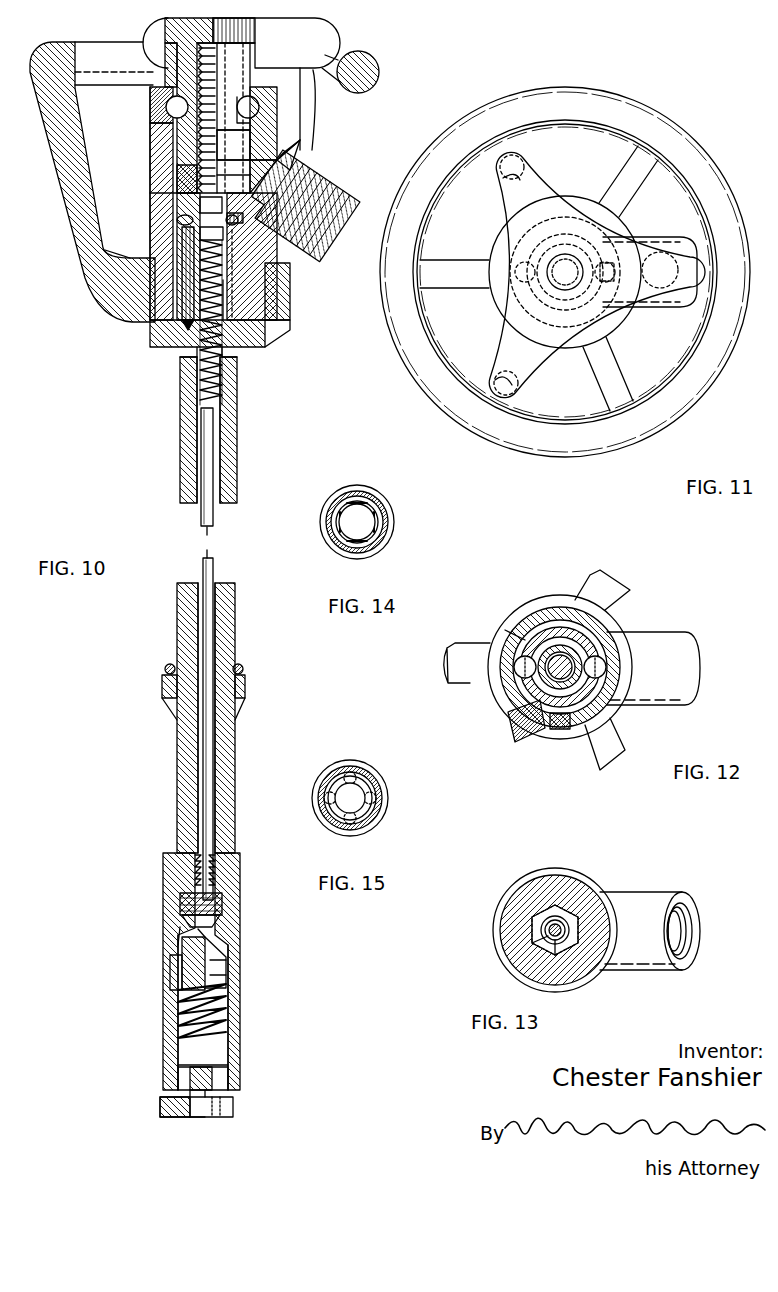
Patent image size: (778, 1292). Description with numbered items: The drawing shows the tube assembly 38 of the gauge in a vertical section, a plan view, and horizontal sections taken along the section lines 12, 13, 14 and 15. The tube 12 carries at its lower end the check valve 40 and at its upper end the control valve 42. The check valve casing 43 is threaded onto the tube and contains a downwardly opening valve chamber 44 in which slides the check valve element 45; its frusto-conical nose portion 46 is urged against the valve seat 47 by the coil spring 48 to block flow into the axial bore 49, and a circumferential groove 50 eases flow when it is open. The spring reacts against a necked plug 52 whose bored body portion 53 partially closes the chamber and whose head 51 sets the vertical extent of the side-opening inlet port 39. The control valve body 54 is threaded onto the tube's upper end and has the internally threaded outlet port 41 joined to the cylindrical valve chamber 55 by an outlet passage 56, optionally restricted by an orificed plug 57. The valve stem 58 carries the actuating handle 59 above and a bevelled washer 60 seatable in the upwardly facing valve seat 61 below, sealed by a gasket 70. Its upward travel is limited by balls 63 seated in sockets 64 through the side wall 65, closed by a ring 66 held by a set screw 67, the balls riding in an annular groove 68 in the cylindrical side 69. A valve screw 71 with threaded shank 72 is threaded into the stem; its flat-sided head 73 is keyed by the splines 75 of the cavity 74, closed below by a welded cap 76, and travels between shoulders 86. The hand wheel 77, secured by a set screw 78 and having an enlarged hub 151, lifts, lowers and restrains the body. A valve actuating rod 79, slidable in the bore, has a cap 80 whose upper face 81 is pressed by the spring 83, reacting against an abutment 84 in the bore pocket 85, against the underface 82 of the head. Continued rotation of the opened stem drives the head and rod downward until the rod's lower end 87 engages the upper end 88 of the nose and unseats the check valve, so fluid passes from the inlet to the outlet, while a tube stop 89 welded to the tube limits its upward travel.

In FIG. 10, the tube 12 is at (236, 621).
In FIG. 10, the section line 13 is at (58, 255).
In FIG. 10, the section line 14 is at (120, 1018).
In FIG. 10, the section line 15 is at (120, 1045).
In FIG. 10, the tube assembly 38 is at (246, 447).
In FIG. 10, the inlet port 39 is at (232, 1096).
In FIG. 15, the inlet port 39 is at (350, 770).
In FIG. 10, the check valve 40 is at (249, 963).
In FIG. 14, the check valve 40 is at (406, 524).
In FIG. 10, the outlet port 41 is at (340, 227).
In FIG. 11, the outlet port 41 is at (672, 310).
In FIG. 12, the outlet port 41 is at (702, 666).
In FIG. 13, the outlet port 41 is at (702, 928).
In FIG. 10, the control valve 42 is at (143, 188).
In FIG. 10, the casing 43 is at (165, 984).
In FIG. 14, the casing 43 is at (384, 498).
In FIG. 15, the casing 43 is at (390, 796).
In FIG. 10, the valve chamber 44 is at (232, 1004).
In FIG. 14, the valve chamber 44 is at (336, 540).
In FIG. 15, the valve chamber 44 is at (380, 778).
In FIG. 10, the check valve element 45 is at (182, 953).
In FIG. 14, the check valve element 45 is at (357, 522).
In FIG. 10, the nose portion 46 is at (180, 933).
In FIG. 10, the valve seat 47 is at (226, 939).
In FIG. 10, the coil spring 48 is at (230, 1034).
In FIG. 14, the coil spring 48 is at (336, 496).
In FIG. 15, the coil spring 48 is at (378, 813).
In FIG. 10, the axial bore 49 is at (214, 509).
In FIG. 10, the circumferential groove 50 is at (170, 964).
In FIG. 14, the circumferential groove 50 is at (357, 498).
In FIG. 10, the head 51 is at (192, 1117).
In FIG. 10, the necked plug 52 is at (235, 1113).
In FIG. 15, the necked plug 52 is at (350, 798).
In FIG. 10, the body portion 53 is at (230, 1078).
In FIG. 10, the body 54 is at (150, 160).
In FIG. 12, the body 54 is at (530, 630).
In FIG. 13, the body 54 is at (518, 878).
In FIG. 10, the valve chamber 55 is at (178, 130).
In FIG. 12, the valve chamber 55 is at (560, 658).
In FIG. 10, the outlet passage 56 is at (275, 166).
In FIG. 10, the orificed plug 57 is at (288, 160).
In FIG. 11, the orificed plug 57 is at (616, 272).
In FIG. 10, the valve stem 58 is at (178, 163).
In FIG. 11, the valve stem 58 is at (590, 243).
In FIG. 12, the valve stem 58 is at (520, 634).
In FIG. 10, the actuating handle 59 is at (332, 24).
In FIG. 11, the actuating handle 59 is at (528, 163).
In FIG. 10, the bevelled washer 60 is at (176, 176).
In FIG. 10, the valve seat 61 is at (163, 202).
In FIG. 10, the balls 63 is at (260, 107).
In FIG. 11, the balls 63 is at (565, 269).
In FIG. 12, the balls 63 is at (514, 668).
In FIG. 10, the sockets 64 is at (262, 120).
In FIG. 12, the sockets 64 is at (518, 656).
In FIG. 10, the side wall 65 is at (150, 203).
In FIG. 12, the side wall 65 is at (552, 610).
In FIG. 13, the side wall 65 is at (506, 890).
In FIG. 10, the ring 66 is at (272, 95).
In FIG. 11, the ring 66 is at (582, 208).
In FIG. 12, the ring 66 is at (573, 616).
In FIG. 12, the set screw 67 is at (562, 730).
In FIG. 10, the annular groove 68 is at (246, 126).
In FIG. 12, the annular groove 68 is at (587, 628).
In FIG. 10, the cylindrical side 69 is at (160, 143).
In FIG. 12, the cylindrical side 69 is at (600, 635).
In FIG. 10, the sealing gasket 70 is at (178, 147).
In FIG. 10, the valve screw 71 is at (243, 218).
In FIG. 12, the valve screw 71 is at (560, 667).
In FIG. 13, the valve screw 71 is at (568, 908).
In FIG. 10, the threaded shank 72 is at (211, 206).
In FIG. 10, the head 73 is at (236, 262).
In FIG. 10, the cavity 74 is at (182, 245).
In FIG. 13, the cavity 74 is at (576, 920).
In FIG. 10, the splines 75 is at (185, 260).
In FIG. 13, the splines 75 is at (545, 906).
In FIG. 10, the cap 76 is at (268, 337).
In FIG. 10, the hand wheel 77 is at (380, 64).
In FIG. 11, the hand wheel 77 is at (655, 108).
In FIG. 12, the set screw 78 is at (515, 742).
In FIG. 10, the valve actuating rod 79 is at (202, 542).
In FIG. 13, the valve actuating rod 79 is at (566, 938).
In FIG. 10, the cap 80 is at (180, 232).
In FIG. 13, the cap 80 is at (555, 955).
In FIG. 10, the upper face 81 is at (195, 221).
In FIG. 10, the underface 82 is at (211, 234).
In FIG. 10, the spring 83 is at (226, 270).
In FIG. 13, the spring 83 is at (536, 940).
In FIG. 10, the abutment 84 is at (190, 405).
In FIG. 10, the pocket 85 is at (237, 377).
In FIG. 10, the shoulders 86 is at (238, 290).
In FIG. 13, the shoulders 86 is at (531, 920).
In FIG. 10, the lower end 87 is at (225, 903).
In FIG. 10, the upper end 88 is at (215, 918).
In FIG. 10, the tube stop 89 is at (247, 689).
In FIG. 10, the hub 151 is at (290, 299).
In FIG. 11, the hub 151 is at (498, 237).